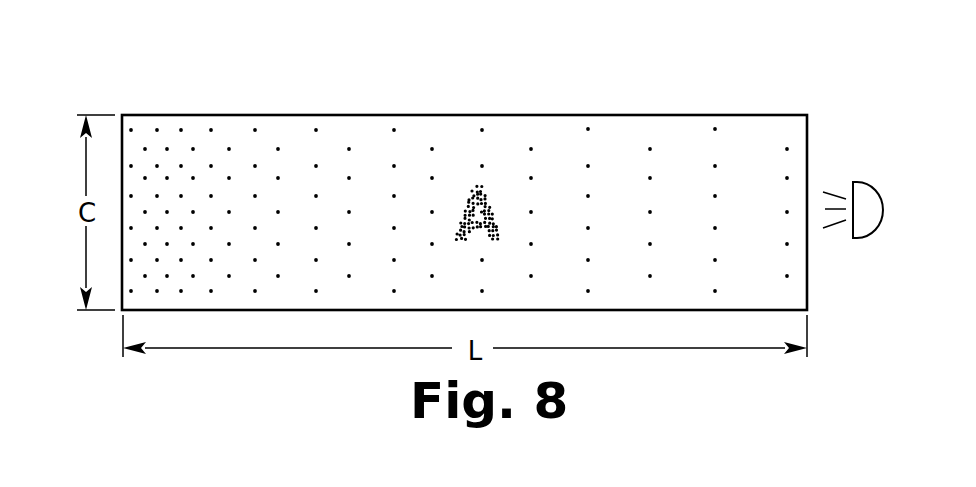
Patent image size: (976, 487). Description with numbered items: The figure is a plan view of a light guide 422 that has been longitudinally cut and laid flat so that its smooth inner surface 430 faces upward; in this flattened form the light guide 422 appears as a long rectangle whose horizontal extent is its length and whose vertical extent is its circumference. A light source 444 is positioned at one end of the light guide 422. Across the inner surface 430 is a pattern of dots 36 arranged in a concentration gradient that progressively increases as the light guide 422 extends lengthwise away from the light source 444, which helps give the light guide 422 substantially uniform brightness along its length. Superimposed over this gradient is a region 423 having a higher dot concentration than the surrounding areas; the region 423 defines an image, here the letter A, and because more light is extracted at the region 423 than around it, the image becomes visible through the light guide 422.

The light guide 422 is at (712, 80).
The smooth inner surface 430 is at (277, 114).
The dots 36 is at (212, 129).
The region 423 is at (477, 190).
The light source 444 is at (860, 182).